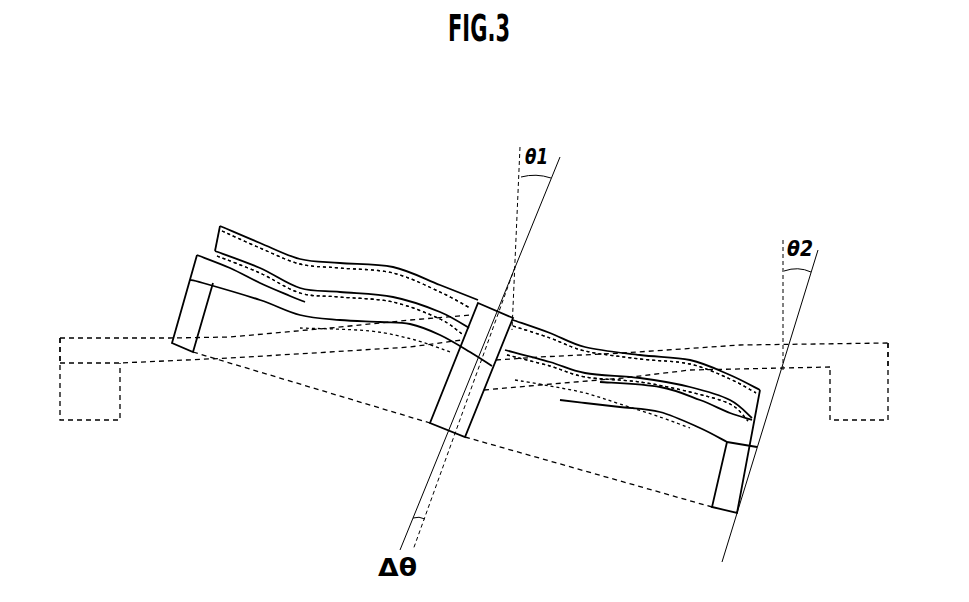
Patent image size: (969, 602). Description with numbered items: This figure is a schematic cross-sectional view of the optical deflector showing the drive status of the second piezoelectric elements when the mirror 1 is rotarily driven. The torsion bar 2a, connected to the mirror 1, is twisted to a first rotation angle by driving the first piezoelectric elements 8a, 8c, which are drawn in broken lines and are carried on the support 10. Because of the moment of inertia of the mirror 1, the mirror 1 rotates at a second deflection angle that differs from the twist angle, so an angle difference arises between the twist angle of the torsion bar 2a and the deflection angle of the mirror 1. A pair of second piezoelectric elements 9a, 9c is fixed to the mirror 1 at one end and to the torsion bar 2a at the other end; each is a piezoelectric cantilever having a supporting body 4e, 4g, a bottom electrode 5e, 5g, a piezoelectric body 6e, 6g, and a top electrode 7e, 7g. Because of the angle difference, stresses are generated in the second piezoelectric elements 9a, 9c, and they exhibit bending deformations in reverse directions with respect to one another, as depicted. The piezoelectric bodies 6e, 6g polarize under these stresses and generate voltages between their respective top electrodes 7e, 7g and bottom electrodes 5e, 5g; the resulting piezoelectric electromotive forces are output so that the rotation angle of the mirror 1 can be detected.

The mirror 1 is at (653, 477).
The torsion bar 2a is at (475, 433).
The supporting body 4e is at (278, 316).
The supporting body 4g is at (576, 407).
The bottom electrode 5e is at (281, 276).
The bottom electrode 5g is at (604, 376).
The piezoelectric body 6e is at (258, 256).
The piezoelectric body 6g is at (590, 361).
The top electrode 7e is at (248, 238).
The top electrode 7g is at (577, 343).
The first piezoelectric element 8a is at (60, 340).
The first piezoelectric element 8c is at (890, 345).
The second piezoelectric element 9a is at (332, 289).
The second piezoelectric element 9c is at (632, 375).
The support 10 is at (70, 405).